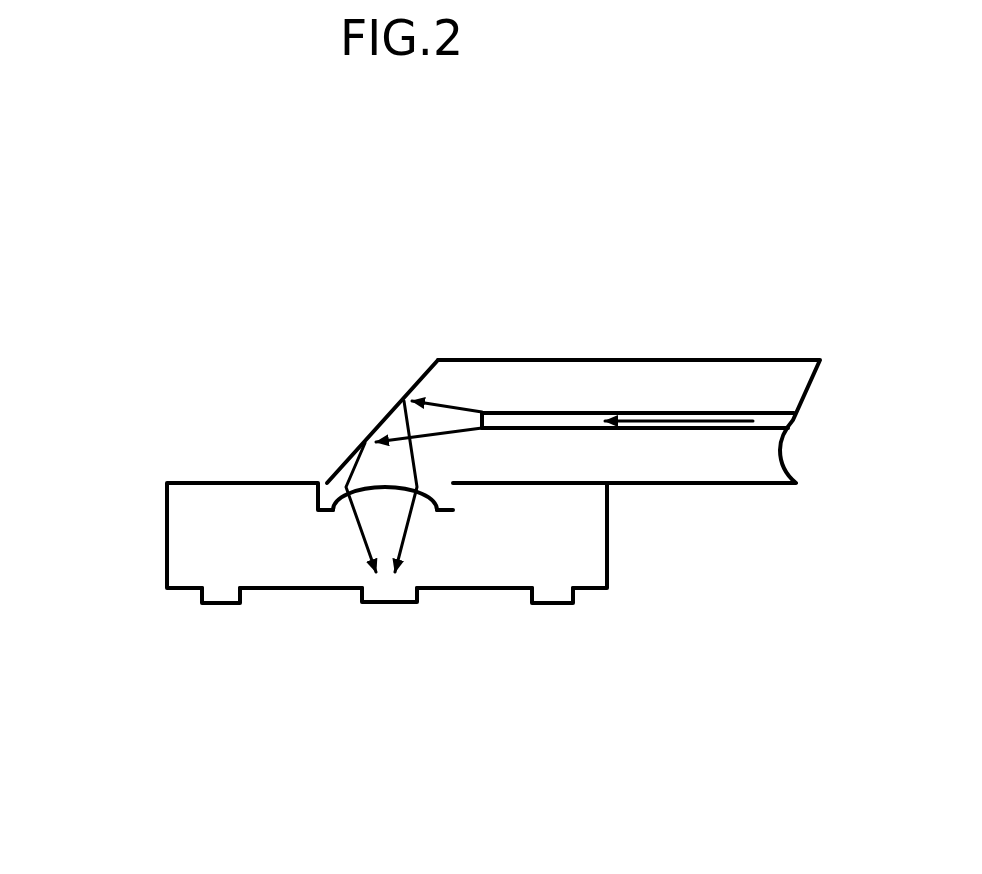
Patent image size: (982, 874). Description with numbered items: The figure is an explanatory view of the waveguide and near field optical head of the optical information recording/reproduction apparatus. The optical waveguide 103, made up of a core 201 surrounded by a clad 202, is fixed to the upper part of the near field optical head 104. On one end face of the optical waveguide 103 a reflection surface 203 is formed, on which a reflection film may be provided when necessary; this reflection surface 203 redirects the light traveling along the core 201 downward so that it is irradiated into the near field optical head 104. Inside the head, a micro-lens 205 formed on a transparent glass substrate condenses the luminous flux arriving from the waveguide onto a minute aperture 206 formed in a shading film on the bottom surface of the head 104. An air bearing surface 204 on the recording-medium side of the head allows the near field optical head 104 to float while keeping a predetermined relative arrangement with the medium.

The optical waveguide 103 is at (717, 357).
The near field optical head 104 is at (163, 543).
The core 201 is at (505, 408).
The clad 202 is at (593, 383).
The reflection surface 203 is at (393, 425).
The air bearing surface 204 is at (540, 607).
The micro-lens 205 is at (383, 502).
The minute aperture 206 is at (395, 610).